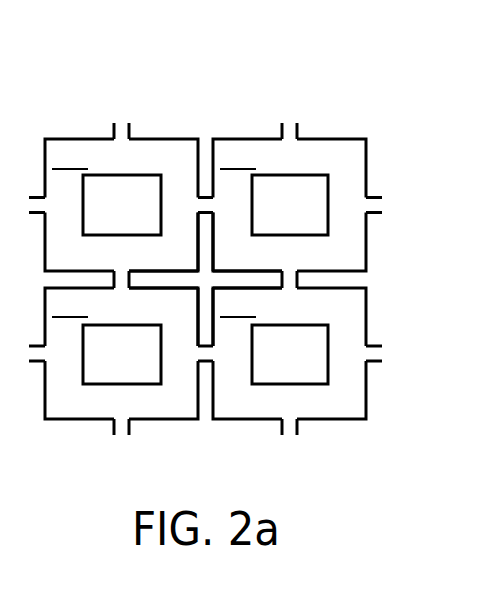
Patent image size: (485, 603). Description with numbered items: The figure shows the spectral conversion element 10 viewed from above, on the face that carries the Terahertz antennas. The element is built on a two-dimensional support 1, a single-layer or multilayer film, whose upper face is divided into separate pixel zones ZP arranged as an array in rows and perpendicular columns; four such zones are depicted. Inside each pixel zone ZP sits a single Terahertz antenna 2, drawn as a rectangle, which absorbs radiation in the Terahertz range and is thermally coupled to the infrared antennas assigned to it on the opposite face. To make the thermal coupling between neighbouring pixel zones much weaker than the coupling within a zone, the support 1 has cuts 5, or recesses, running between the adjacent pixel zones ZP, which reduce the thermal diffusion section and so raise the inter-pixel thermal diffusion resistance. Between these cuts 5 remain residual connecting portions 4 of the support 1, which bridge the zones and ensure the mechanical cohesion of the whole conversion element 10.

The spectral conversion element 10 is at (350, 107).
The two-dimensional support 1 is at (173, 160).
The Terahertz antenna 2 is at (114, 197).
The residual connecting portion 4 is at (291, 278).
The cut 5 is at (264, 279).